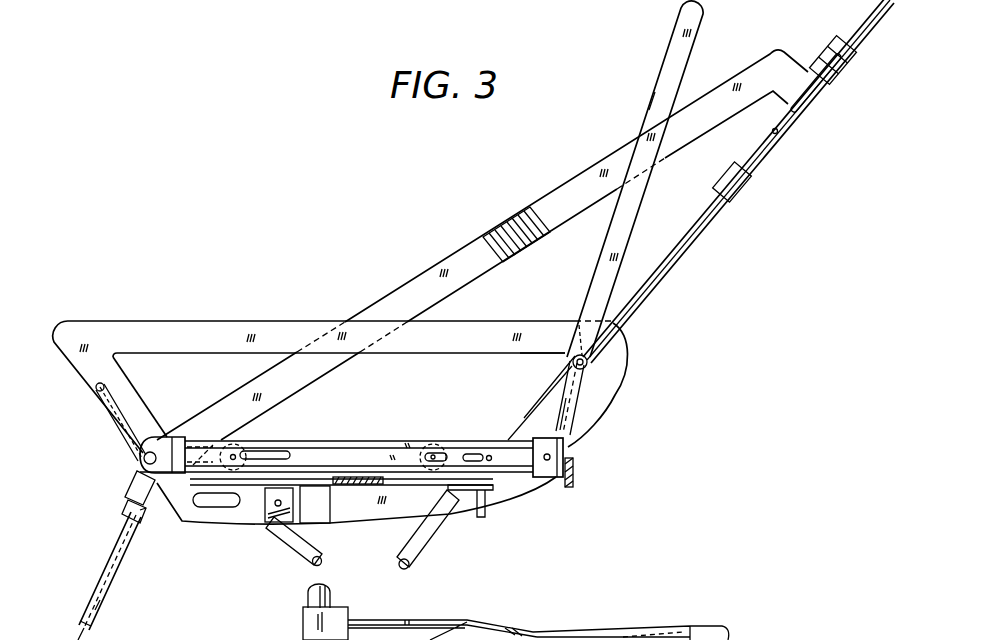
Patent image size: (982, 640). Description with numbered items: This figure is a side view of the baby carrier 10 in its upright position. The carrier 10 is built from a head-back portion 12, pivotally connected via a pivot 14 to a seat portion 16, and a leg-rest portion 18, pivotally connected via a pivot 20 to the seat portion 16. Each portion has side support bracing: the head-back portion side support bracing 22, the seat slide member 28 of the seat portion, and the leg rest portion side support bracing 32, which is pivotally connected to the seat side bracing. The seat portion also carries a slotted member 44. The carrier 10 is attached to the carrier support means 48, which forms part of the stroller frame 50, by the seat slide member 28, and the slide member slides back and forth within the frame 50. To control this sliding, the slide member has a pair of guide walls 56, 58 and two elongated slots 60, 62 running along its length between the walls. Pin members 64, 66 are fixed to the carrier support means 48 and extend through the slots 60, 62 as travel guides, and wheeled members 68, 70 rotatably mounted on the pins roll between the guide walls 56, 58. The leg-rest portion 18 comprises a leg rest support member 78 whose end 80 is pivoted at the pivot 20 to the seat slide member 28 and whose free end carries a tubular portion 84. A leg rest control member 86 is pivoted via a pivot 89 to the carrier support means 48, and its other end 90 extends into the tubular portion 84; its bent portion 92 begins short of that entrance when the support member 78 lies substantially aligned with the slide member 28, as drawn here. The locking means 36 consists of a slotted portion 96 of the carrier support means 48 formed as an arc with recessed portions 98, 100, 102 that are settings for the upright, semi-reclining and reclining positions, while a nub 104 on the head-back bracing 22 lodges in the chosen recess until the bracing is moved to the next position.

The carrier 10 is at (196, 250).
The head-back portion 12 is at (662, 40).
The pivot 14 is at (551, 478).
The seat portion 16 is at (384, 435).
The leg-rest portion 18 is at (138, 552).
The pivot 20 is at (160, 450).
The head-back portion side support bracing 22 is at (655, 98).
The seat slide member 28 is at (327, 467).
The leg rest portion side support bracing 32 is at (110, 538).
The locking means 36 is at (617, 381).
The slotted member 44 is at (410, 447).
The carrier support means 48 is at (140, 336).
The stroller frame 50 is at (468, 247).
The guide wall 56 is at (328, 442).
The guide wall 58 is at (320, 486).
The elongated slot 60 is at (272, 452).
The elongated slot 62 is at (463, 453).
The pin member 64 is at (232, 450).
The pin member 66 is at (437, 453).
The wheeled member 68 is at (223, 455).
The wheeled member 70 is at (433, 467).
The leg rest support member 78 is at (126, 500).
The end of leg rest support member 80 is at (128, 478).
The tubular portion 84 is at (96, 584).
The leg rest control member 86 is at (108, 421).
The pivot 89 is at (113, 357).
The end of leg rest control member 90 is at (96, 632).
The bent portion 92 is at (140, 511).
The slotted portion 96 is at (575, 406).
The recessed portion 98 is at (592, 362).
The recessed portion 100 is at (578, 397).
The recessed area 102 is at (572, 427).
The nub 104 is at (577, 352).